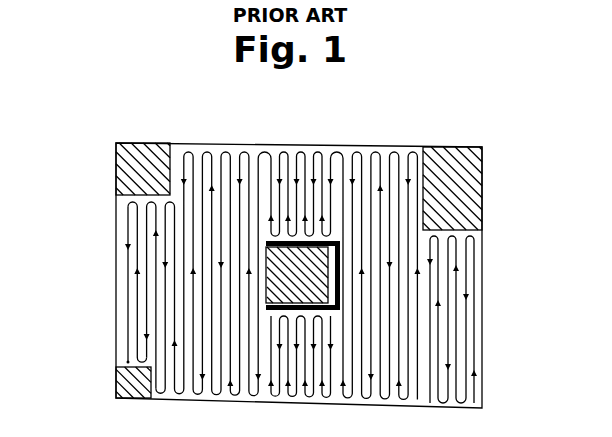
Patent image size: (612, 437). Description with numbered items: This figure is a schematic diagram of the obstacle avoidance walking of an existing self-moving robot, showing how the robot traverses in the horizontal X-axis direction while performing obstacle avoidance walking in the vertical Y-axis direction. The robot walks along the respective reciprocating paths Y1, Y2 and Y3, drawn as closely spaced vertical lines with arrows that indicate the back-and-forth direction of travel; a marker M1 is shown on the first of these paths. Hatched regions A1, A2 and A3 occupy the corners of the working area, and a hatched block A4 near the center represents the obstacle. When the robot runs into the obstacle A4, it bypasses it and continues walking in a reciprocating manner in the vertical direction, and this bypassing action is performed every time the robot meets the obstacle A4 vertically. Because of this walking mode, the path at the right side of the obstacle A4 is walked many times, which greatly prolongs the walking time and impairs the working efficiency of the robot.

The lower-left pad region A1 is at (115, 379).
The upper-left pad region A2 is at (119, 144).
The upper-right pad region A3 is at (443, 155).
The obstacle A4 is at (297, 262).
The reciprocating path Y1 is at (130, 320).
The reciprocating path Y2 is at (137, 294).
The reciprocating path Y3 is at (143, 235).
The current direction marker M1 is at (130, 246).